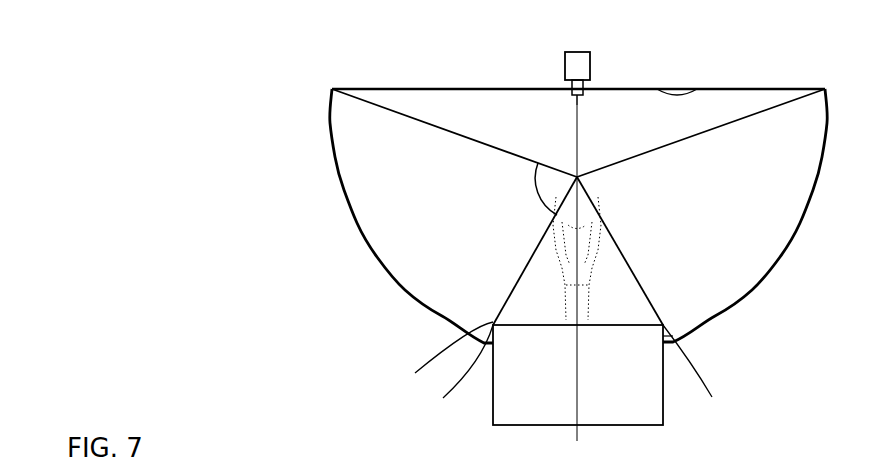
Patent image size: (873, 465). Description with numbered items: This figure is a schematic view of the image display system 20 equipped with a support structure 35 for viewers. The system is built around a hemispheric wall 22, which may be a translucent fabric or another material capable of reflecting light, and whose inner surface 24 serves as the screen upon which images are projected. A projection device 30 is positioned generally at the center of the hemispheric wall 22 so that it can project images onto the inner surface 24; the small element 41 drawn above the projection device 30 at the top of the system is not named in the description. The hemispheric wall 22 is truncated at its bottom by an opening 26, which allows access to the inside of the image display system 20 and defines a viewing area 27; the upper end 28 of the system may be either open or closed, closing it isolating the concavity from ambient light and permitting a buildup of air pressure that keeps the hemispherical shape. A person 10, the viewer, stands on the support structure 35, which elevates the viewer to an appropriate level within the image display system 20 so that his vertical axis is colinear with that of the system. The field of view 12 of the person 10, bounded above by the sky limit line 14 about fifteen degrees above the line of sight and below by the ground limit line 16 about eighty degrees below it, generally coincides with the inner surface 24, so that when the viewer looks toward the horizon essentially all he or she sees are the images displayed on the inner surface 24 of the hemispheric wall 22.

The person 10 is at (595, 200).
The field of view 12 is at (554, 213).
The sky limit line 14 is at (457, 133).
The ground limit line 16 is at (439, 354).
The image display system 20 is at (720, 342).
The hemispheric wall 22 is at (443, 327).
The inner surface 24 is at (361, 227).
The opening 26 is at (573, 370).
The viewing area 27 is at (668, 336).
The upper end 28 is at (700, 89).
The projection device 30 is at (598, 80).
The support structure 35 is at (578, 375).
The light source 41 is at (580, 45).